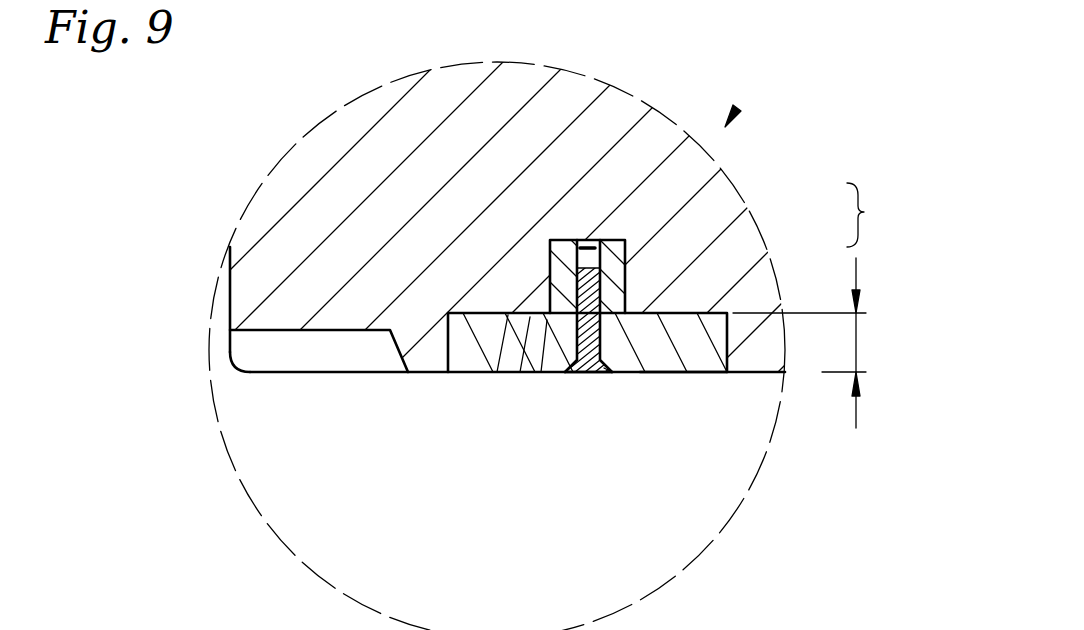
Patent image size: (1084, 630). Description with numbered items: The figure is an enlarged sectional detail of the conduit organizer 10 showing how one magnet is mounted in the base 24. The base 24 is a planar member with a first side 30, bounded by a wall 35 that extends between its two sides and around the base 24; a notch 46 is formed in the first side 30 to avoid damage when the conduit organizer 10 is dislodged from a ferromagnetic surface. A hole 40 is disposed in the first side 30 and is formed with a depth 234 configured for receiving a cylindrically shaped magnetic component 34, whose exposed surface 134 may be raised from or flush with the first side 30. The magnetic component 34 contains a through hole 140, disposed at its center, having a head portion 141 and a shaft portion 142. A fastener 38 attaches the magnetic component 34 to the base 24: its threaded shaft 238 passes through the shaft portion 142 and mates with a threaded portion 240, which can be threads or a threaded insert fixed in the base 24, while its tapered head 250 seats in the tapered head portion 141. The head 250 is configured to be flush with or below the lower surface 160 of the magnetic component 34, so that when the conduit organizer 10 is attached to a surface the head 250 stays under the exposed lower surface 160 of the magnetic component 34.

The conduit organizer 10 is at (735, 112).
The base 24 is at (310, 213).
The first side 30 is at (428, 372).
The magnetic component 34 is at (697, 362).
The wall 35 is at (228, 293).
The fastener 38 is at (577, 333).
The hole 40 is at (497, 372).
The notch 46 is at (343, 352).
The exposed surface 134 is at (520, 372).
The hole 140 is at (880, 215).
The head portion 141 is at (600, 340).
The shaft portion 142 is at (604, 368).
The lower surface 160 is at (672, 372).
The depth 234 is at (856, 342).
The threaded shaft 238 is at (541, 372).
The threaded portion 240 is at (615, 242).
The head 250 is at (586, 364).